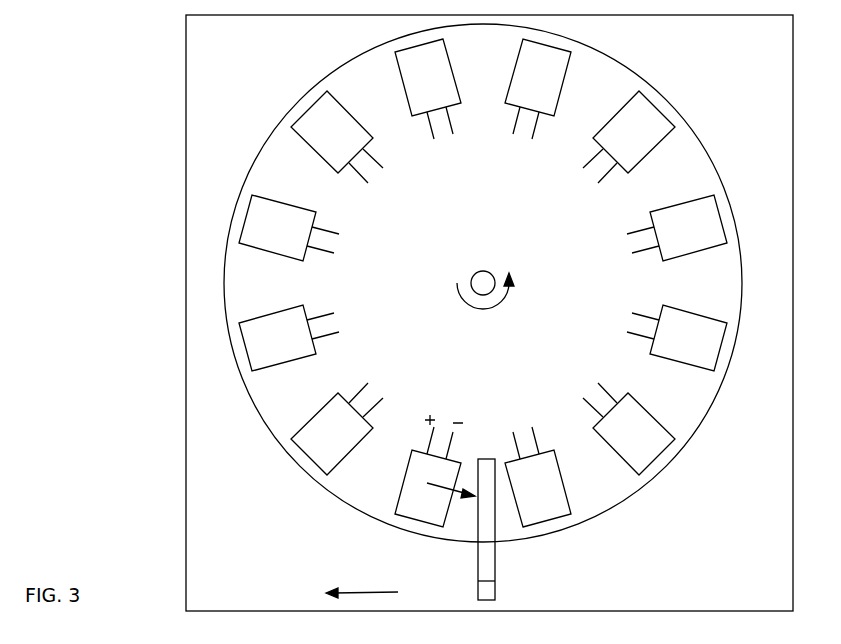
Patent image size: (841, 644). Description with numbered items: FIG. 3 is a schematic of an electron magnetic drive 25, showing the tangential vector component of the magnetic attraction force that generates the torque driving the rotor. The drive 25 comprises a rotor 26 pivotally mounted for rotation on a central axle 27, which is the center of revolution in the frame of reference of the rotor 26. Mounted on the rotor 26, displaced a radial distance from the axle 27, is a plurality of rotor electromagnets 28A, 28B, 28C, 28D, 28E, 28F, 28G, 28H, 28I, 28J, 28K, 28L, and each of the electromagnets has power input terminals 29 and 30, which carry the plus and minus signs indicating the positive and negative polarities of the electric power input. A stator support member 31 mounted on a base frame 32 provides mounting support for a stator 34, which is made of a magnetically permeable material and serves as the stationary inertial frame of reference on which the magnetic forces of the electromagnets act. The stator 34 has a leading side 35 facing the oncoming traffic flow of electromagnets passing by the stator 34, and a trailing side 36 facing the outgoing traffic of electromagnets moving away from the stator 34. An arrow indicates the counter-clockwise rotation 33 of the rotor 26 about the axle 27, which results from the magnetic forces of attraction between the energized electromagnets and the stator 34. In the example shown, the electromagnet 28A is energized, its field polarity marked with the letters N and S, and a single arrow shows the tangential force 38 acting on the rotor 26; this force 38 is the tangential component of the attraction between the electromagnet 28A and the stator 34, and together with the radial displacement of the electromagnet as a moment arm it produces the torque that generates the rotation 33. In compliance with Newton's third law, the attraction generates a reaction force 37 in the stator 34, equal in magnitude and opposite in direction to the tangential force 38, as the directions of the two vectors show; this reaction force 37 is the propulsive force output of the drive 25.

The electron magnetic drive 25 is at (122, 444).
The rotor 26 is at (290, 423).
The central axle 27 is at (486, 278).
The rotor electromagnet 28A is at (420, 488).
The rotor electromagnet 28B is at (335, 407).
The rotor electromagnet 28C is at (292, 315).
The rotor electromagnet 28D is at (258, 212).
The rotor electromagnet 28E is at (315, 128).
The rotor electromagnet 28F is at (422, 72).
The rotor electromagnet 28G is at (530, 84).
The rotor electromagnet 28H is at (623, 152).
The rotor electromagnet 28I is at (680, 243).
The rotor electromagnet 28J is at (717, 325).
The rotor electromagnet 28K is at (633, 405).
The rotor electromagnet 28L is at (550, 483).
The power input terminal 29 is at (317, 255).
The power input terminal 30 is at (330, 237).
The stator support member 31 is at (490, 590).
The base frame 32 is at (668, 576).
The rotation 33 is at (515, 281).
The stator 34 is at (483, 562).
The leading side 35 is at (477, 573).
The trailing side 36 is at (495, 543).
The reaction force 37 is at (333, 587).
The tangential force 38 is at (466, 475).